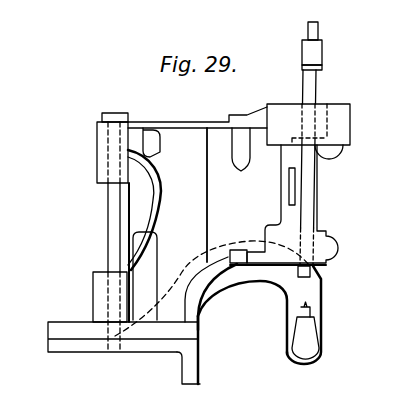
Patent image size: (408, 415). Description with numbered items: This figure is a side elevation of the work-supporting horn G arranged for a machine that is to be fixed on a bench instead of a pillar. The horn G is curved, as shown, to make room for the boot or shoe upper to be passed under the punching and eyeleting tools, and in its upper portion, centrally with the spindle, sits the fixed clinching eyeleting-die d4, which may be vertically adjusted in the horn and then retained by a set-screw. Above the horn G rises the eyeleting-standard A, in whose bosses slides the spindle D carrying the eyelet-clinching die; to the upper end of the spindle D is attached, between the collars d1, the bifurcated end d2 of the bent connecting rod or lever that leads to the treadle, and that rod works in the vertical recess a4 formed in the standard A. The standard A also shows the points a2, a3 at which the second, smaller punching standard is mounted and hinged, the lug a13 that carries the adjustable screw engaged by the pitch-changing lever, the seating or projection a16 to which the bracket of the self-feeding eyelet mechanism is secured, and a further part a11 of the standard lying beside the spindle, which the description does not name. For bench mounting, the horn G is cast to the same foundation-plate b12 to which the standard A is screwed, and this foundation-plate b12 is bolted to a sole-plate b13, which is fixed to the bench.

The standard A is at (226, 245).
The hinge point a2 is at (120, 149).
The hinge point a3 is at (123, 307).
The vertical recess a4 is at (162, 210).
The slide bar a11 is at (288, 180).
The lug a13 is at (337, 159).
The seating or projection a16 is at (361, 137).
The foundation-plate b12 is at (50, 323).
The sole-plate b13 is at (86, 352).
The collar d1 is at (306, 42).
The bifurcated end d2 is at (323, 55).
The fixed clinching eyeleting-die d4 is at (308, 307).
The spindle D is at (317, 93).
The work-supporting horn G is at (299, 364).